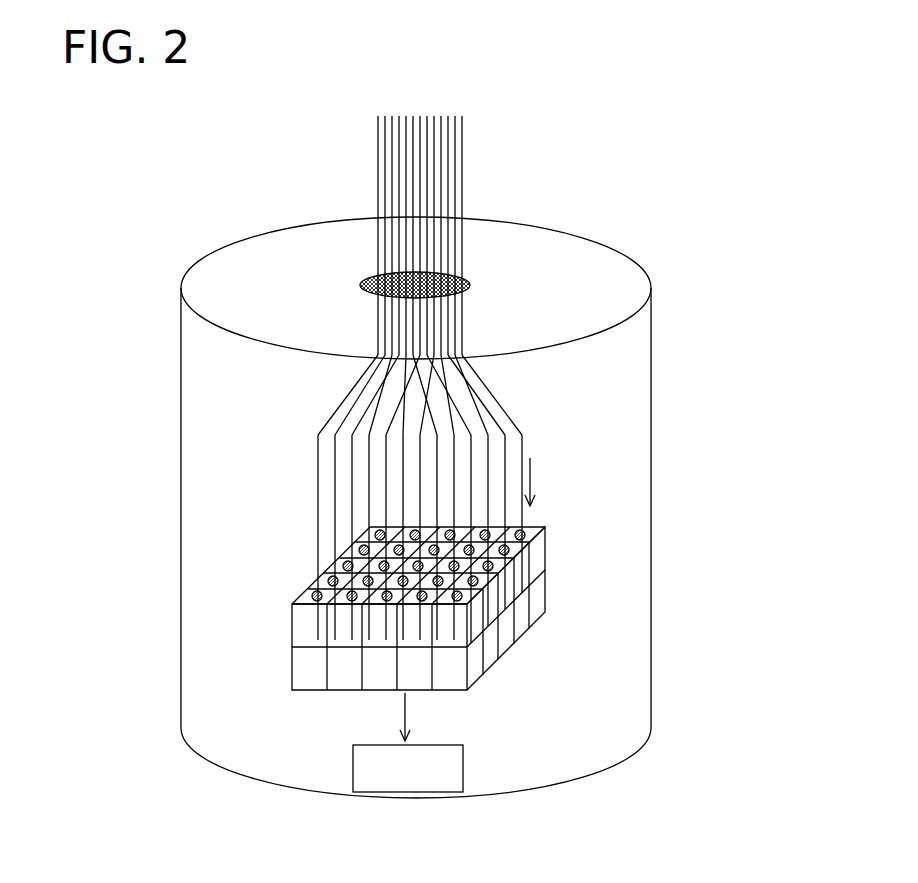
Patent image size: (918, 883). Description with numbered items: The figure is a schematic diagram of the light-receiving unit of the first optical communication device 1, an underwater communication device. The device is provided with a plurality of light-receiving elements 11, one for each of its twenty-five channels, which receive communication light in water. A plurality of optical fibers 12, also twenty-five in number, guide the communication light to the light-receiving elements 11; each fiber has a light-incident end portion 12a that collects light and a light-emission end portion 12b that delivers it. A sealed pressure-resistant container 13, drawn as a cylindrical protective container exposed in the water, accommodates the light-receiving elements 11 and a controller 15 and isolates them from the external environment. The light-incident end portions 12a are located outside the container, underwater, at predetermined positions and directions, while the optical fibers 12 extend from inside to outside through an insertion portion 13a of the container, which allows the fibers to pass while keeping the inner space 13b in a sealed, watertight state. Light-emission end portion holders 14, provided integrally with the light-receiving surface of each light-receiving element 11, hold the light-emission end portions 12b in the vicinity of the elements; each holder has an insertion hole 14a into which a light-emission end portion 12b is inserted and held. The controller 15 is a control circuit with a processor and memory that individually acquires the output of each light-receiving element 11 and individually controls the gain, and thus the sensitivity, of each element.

The first optical communication device 1 is at (122, 212).
The light-receiving elements 11 is at (532, 603).
The optical fibers 12 is at (500, 408).
The light-incident end portion 12a is at (463, 142).
The light-emission end portion 12b is at (550, 576).
The sealed pressure-resistant container 13 is at (651, 343).
The insertion portion 13a is at (470, 293).
The inner space 13b is at (614, 412).
The light-emission end portion holders 14 is at (532, 557).
The insertion hole 14a is at (545, 527).
The controller 15 is at (463, 768).